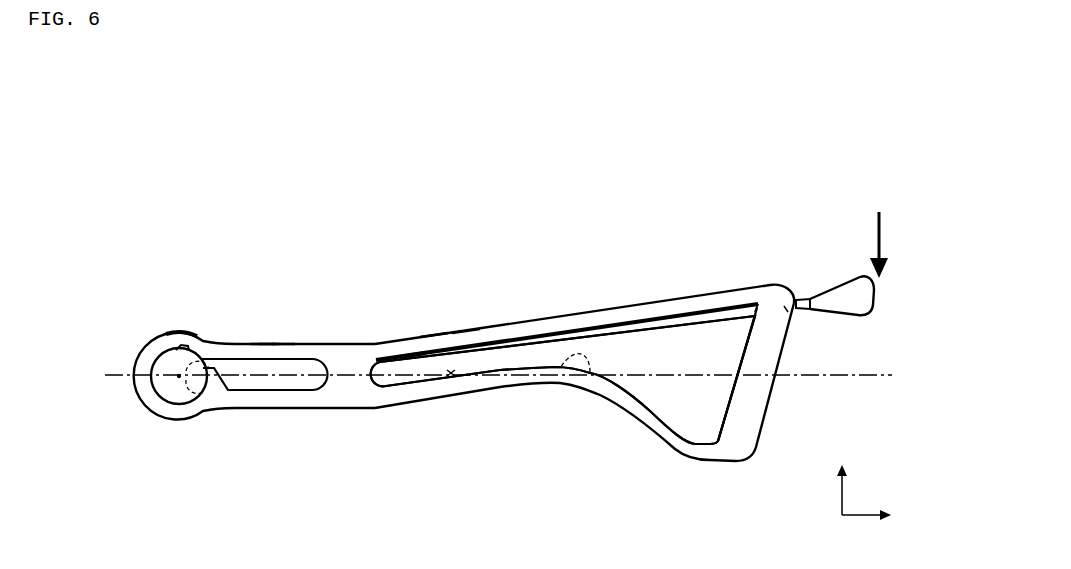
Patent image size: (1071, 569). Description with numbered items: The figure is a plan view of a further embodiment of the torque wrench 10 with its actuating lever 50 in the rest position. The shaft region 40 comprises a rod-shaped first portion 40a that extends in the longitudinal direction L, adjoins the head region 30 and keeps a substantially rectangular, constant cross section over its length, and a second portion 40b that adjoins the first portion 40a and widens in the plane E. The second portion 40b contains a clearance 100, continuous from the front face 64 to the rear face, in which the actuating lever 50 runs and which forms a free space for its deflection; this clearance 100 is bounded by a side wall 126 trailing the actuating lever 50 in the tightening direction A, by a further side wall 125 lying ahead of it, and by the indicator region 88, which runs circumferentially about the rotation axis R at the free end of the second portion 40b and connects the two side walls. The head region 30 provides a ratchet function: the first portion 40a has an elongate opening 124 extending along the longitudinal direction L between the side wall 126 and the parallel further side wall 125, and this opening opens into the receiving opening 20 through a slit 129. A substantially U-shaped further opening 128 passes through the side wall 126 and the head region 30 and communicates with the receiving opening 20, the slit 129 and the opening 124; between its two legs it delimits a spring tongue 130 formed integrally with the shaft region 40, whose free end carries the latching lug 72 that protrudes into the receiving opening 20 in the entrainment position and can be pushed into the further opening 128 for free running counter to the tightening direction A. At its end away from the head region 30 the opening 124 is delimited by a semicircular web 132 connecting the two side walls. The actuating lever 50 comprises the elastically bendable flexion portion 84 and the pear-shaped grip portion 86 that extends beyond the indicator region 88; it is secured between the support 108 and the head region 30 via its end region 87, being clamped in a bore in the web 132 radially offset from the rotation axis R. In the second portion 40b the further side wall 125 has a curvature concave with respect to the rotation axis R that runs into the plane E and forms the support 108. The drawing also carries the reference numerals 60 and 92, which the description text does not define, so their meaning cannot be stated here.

The torque wrench 10 is at (576, 260).
The receiving opening 20 is at (180, 392).
The head region 30 is at (203, 330).
The shaft region 40 is at (372, 318).
The first portion 40a is at (283, 344).
The second portion 40b is at (434, 336).
The actuating lever 50 is at (478, 356).
The ring 60 is at (150, 350).
The front face 64 is at (515, 322).
The latching lug 72 is at (160, 366).
The flexion portion 84 is at (563, 380).
The grip portion 86 is at (835, 288).
The end region 87 is at (412, 356).
The indicator region 88 is at (771, 280).
The grip 92 is at (734, 446).
The clearance 100 is at (452, 373).
The support 108 is at (590, 372).
The elongate opening 124 is at (262, 356).
The further side wall 125 is at (442, 394).
The side wall 126 is at (466, 330).
The further opening 128 is at (268, 344).
The slit 129 is at (197, 400).
The spring tongue 130 is at (185, 333).
The web 132 is at (330, 386).
The longitudinal direction L is at (487, 380).
The rotation axis R is at (172, 382).
The tightening direction A is at (865, 245).
The plane E is at (864, 492).